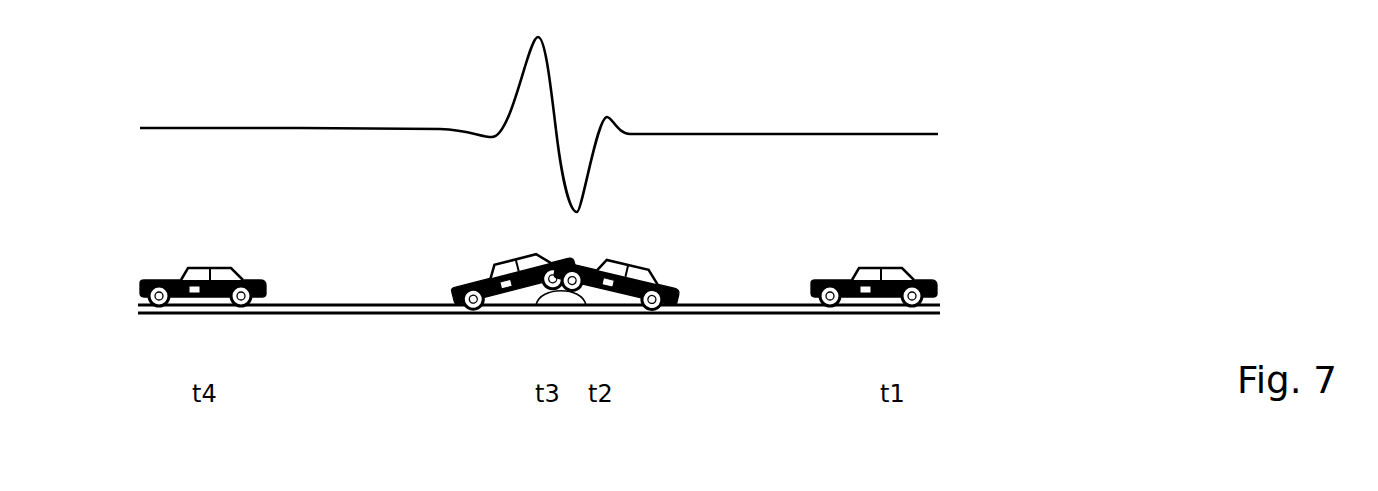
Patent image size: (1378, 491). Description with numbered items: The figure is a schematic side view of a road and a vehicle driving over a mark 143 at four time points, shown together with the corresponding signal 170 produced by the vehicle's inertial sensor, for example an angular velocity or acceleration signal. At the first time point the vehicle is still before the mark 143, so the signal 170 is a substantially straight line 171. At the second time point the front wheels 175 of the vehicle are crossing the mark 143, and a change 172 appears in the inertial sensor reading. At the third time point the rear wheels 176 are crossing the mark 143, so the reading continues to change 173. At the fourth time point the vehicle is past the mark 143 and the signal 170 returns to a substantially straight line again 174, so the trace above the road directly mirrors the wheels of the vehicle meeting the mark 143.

The mark 143 is at (565, 299).
The signal 170 is at (628, 127).
The substantially straight line 171 is at (857, 132).
The change 172 is at (595, 157).
The continued change 173 is at (552, 83).
The substantially straight line again 174 is at (180, 128).
The front wheels 175 is at (650, 338).
The rear wheels 176 is at (648, 287).